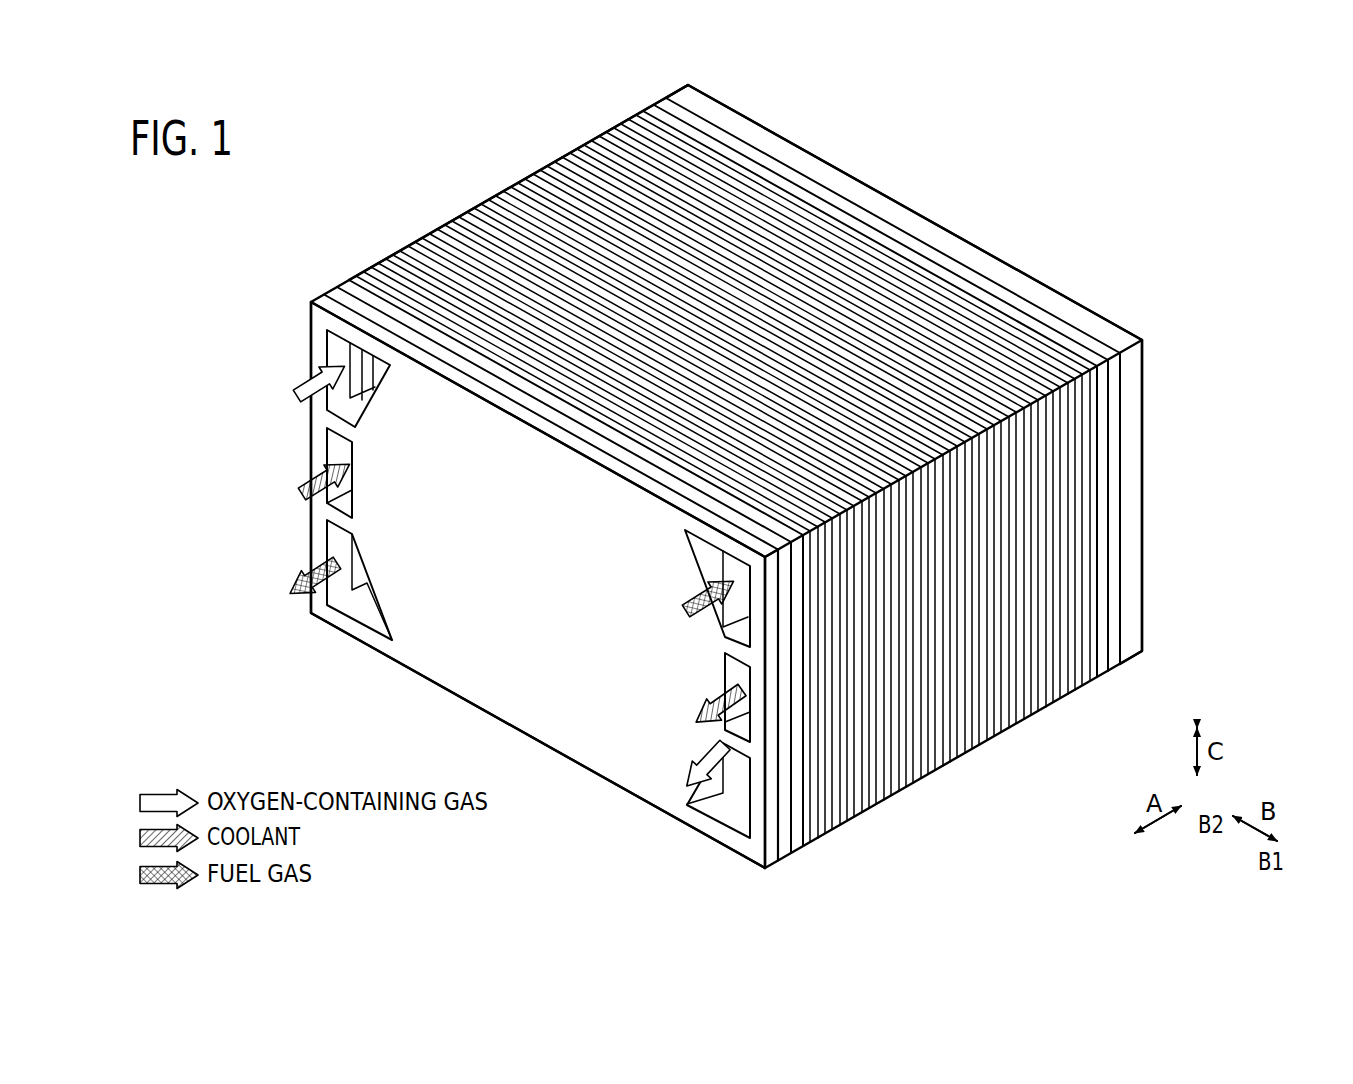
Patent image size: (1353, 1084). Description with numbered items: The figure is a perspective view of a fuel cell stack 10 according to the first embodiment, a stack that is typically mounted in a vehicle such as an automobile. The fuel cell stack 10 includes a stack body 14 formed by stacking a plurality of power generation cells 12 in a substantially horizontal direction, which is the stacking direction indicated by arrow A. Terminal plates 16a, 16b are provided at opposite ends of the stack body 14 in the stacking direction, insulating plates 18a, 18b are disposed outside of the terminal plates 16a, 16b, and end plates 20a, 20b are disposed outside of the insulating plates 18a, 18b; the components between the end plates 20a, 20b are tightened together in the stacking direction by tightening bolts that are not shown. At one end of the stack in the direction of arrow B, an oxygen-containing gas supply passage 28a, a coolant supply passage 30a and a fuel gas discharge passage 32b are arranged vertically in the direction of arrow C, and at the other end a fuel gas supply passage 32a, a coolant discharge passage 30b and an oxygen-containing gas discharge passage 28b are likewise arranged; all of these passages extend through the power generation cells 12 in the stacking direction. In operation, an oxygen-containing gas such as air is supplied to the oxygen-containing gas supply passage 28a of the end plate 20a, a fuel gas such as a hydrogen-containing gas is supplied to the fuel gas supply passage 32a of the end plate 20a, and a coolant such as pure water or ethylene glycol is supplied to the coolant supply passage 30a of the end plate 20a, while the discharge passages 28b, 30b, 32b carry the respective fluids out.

The fuel cell stack 10 is at (223, 231).
The power generation cell 12 is at (493, 194).
The stack body 14 is at (448, 142).
The terminal plate 16a is at (362, 283).
The terminal plate 16b is at (1105, 534).
The insulating plate 18a is at (352, 303).
The insulating plate 18b is at (1112, 506).
The end plate 20a is at (450, 636).
The end plate 20b is at (1020, 273).
The oxygen-containing gas supply passage 28a is at (335, 361).
The oxygen-containing gas discharge passage 28b is at (712, 755).
The coolant supply passage 30a is at (335, 447).
The coolant discharge passage 30b is at (732, 668).
The fuel gas supply passage 32a is at (713, 565).
The fuel gas discharge passage 32b is at (335, 536).